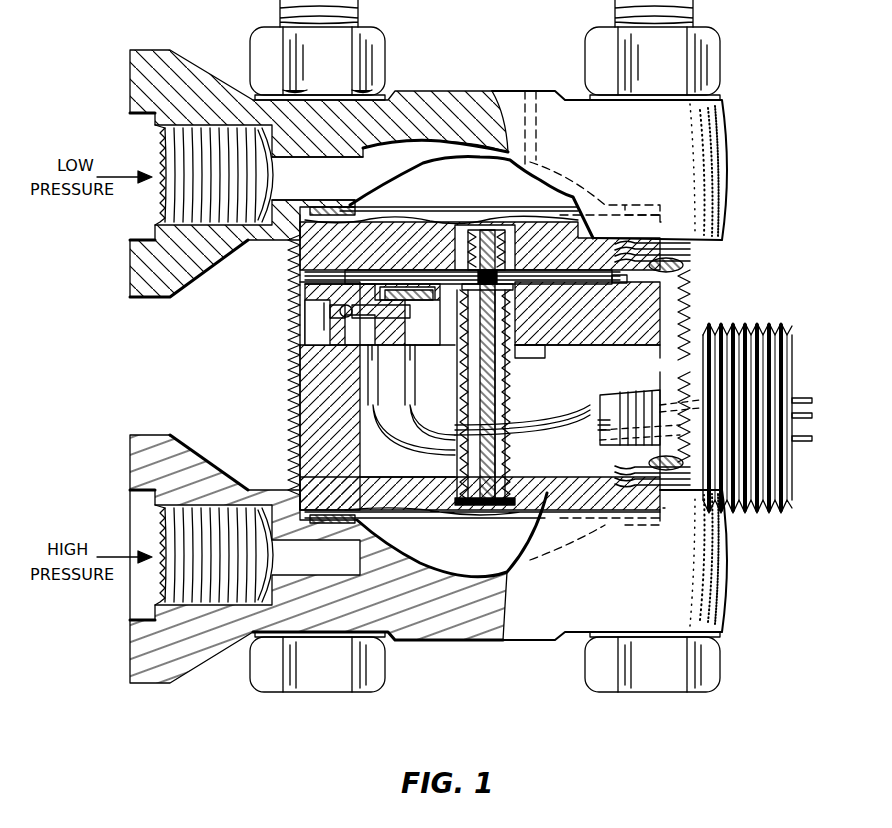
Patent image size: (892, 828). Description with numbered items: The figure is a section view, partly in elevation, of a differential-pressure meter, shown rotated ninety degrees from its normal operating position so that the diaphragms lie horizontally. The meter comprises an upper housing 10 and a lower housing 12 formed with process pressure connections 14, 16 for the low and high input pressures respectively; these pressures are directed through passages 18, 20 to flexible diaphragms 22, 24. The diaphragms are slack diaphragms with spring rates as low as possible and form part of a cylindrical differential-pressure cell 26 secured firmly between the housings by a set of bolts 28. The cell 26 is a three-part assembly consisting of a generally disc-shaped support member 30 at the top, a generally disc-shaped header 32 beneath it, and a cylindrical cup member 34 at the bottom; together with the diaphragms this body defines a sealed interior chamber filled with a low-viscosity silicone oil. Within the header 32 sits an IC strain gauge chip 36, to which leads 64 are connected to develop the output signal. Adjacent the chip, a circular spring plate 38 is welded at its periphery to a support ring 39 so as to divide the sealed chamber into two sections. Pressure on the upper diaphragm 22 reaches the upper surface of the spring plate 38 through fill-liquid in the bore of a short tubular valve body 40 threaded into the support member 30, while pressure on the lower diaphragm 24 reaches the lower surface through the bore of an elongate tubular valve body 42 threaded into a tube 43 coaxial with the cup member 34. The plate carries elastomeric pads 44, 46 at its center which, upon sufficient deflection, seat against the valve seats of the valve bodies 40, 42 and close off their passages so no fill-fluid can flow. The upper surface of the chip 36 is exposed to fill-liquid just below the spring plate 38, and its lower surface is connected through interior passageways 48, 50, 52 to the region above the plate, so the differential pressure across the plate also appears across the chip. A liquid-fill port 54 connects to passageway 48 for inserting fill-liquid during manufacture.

The upper housing 10 is at (725, 128).
The lower housing 12 is at (725, 573).
The process pressure connection 14 is at (137, 140).
The process pressure connection 16 is at (137, 518).
The passage 18 is at (392, 178).
The passage 20 is at (392, 578).
The upper flexible diaphragm 22 is at (442, 212).
The lower flexible diaphragm 24 is at (430, 520).
The differential-pressure cell 26 is at (243, 383).
The bolts 28 is at (284, 289).
The support member 30 is at (351, 262).
The header 32 is at (585, 331).
The cup member 34 is at (336, 445).
The IC strain gauge chip 36 is at (406, 248).
The spring plate 38 is at (547, 290).
The support ring 39 is at (616, 284).
The tubular valve body 40 is at (502, 246).
The elongate tubular valve body 42 is at (495, 332).
The tube 43 is at (516, 388).
The elastomeric pad 44 is at (504, 266).
The elastomeric pad 46 is at (505, 290).
The interior passageway 48 is at (372, 350).
The interior passageway 50 is at (298, 312).
The interior passageway 52 is at (336, 277).
The liquid-fill port 54 is at (355, 342).
The leads 64 is at (440, 410).